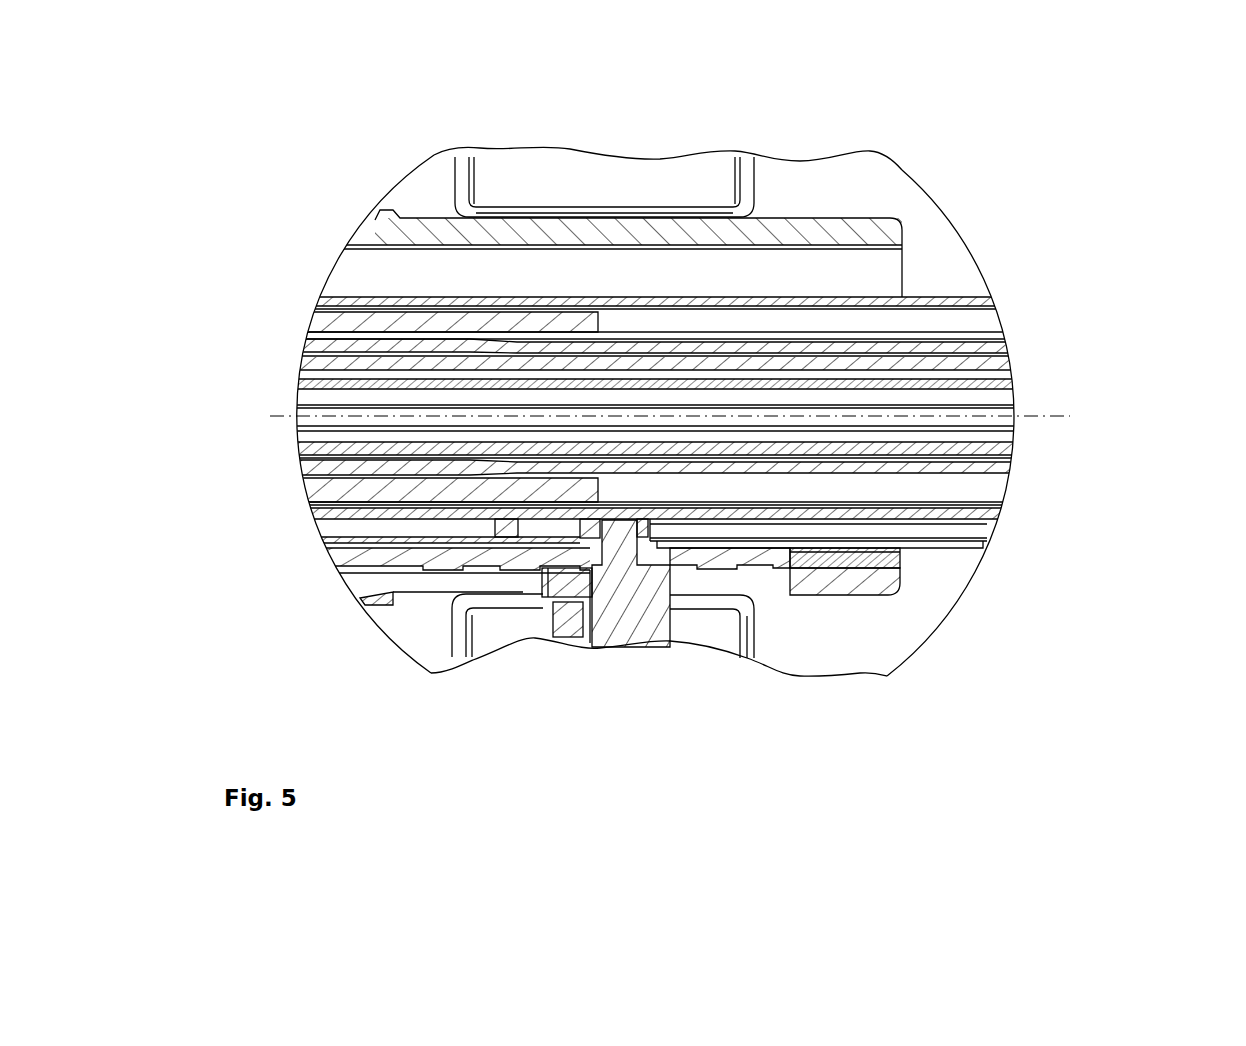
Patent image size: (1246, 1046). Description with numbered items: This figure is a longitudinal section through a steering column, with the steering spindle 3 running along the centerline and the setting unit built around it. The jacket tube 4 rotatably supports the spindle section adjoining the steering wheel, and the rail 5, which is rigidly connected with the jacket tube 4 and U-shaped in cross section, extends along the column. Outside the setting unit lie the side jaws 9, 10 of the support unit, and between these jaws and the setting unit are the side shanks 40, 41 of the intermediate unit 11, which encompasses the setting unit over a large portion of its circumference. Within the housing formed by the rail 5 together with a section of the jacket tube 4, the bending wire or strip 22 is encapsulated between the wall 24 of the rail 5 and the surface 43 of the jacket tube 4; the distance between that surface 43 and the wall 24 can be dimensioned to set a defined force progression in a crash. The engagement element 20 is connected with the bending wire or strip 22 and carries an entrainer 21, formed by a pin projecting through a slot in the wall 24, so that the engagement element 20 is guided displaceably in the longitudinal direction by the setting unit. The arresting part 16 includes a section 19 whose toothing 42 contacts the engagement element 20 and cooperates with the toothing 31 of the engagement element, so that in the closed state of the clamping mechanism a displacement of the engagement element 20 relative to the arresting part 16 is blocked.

The steering spindle 3 is at (1022, 451).
The jacket tube 4 is at (985, 513).
The rail 5 is at (326, 542).
The side jaw 9 is at (703, 602).
The side jaw 10 is at (630, 212).
The intermediate unit 11 is at (817, 595).
The arresting part 16 is at (640, 647).
The section of the arresting part 19 is at (590, 647).
The engagement element 20 is at (905, 553).
The entrainer 21 is at (647, 518).
The bending wire or strip 22 is at (840, 524).
The wall 24 is at (547, 535).
The toothing of the engagement element 31 is at (745, 575).
The side shank of the intermediate unit 40 is at (903, 593).
The side shank of the intermediate unit 41 is at (785, 228).
The toothing of the arresting part 42 is at (433, 565).
The surface of the jacket tube 43 is at (363, 517).